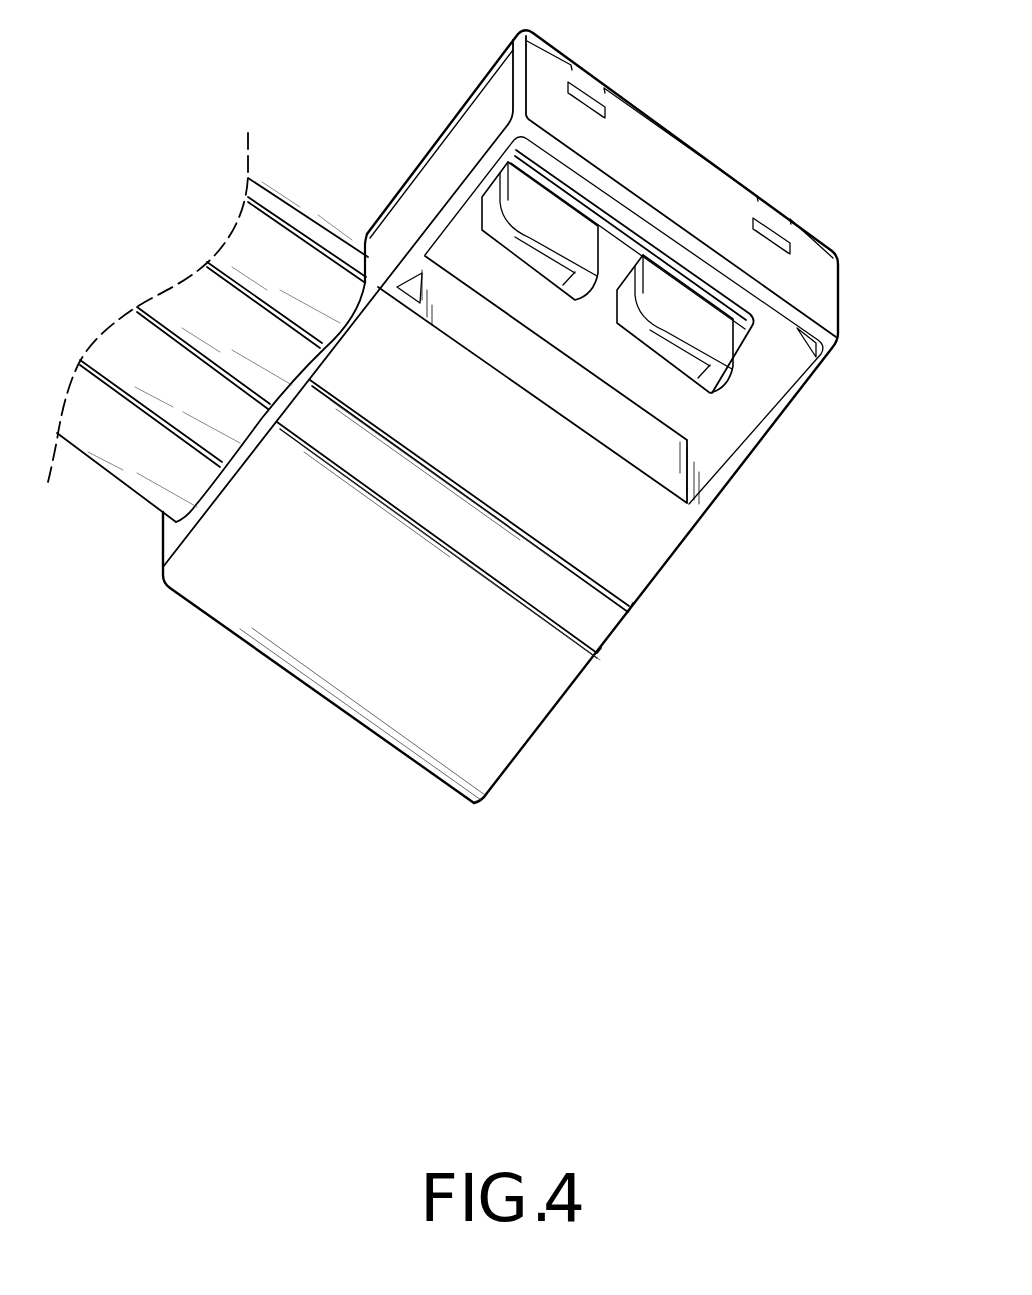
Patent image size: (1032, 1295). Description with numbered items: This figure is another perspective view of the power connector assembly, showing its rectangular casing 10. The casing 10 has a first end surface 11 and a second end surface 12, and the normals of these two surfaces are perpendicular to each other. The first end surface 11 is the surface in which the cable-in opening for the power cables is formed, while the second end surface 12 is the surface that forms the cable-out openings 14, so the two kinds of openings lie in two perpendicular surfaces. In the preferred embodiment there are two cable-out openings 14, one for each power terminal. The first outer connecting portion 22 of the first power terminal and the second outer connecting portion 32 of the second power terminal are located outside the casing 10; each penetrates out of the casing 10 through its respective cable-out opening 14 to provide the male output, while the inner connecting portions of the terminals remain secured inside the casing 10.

The casing 10 is at (790, 430).
The first end surface 11 is at (432, 166).
The second end surface 12 is at (692, 410).
The cable-out opening 14 is at (608, 222).
The first outer connecting portion 22 is at (545, 258).
The second outer connecting portion 32 is at (677, 357).